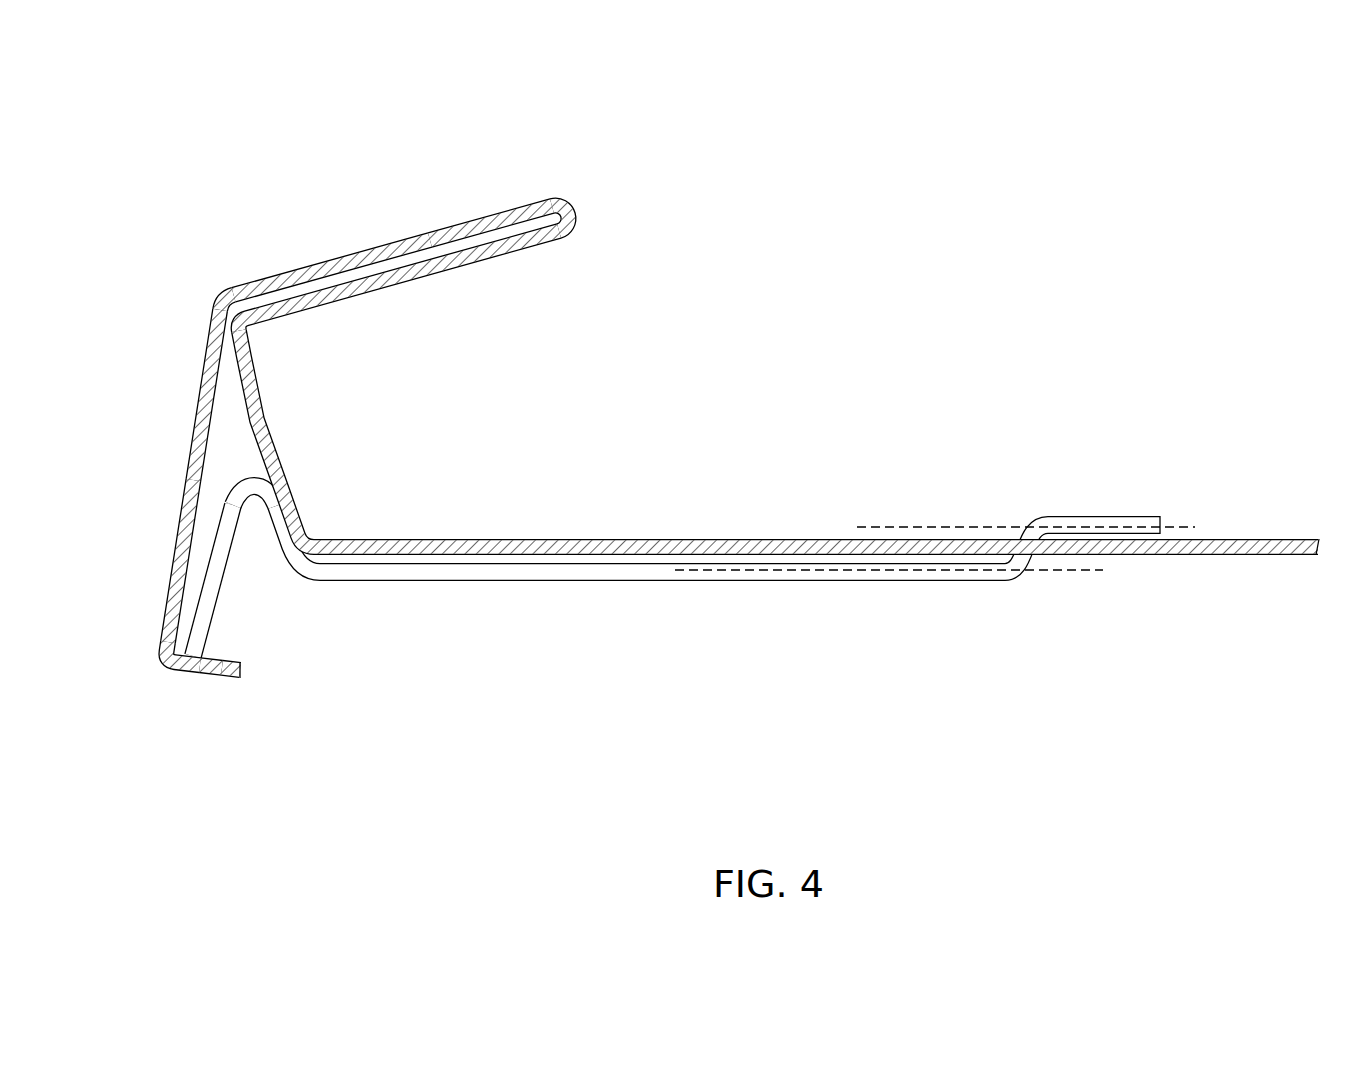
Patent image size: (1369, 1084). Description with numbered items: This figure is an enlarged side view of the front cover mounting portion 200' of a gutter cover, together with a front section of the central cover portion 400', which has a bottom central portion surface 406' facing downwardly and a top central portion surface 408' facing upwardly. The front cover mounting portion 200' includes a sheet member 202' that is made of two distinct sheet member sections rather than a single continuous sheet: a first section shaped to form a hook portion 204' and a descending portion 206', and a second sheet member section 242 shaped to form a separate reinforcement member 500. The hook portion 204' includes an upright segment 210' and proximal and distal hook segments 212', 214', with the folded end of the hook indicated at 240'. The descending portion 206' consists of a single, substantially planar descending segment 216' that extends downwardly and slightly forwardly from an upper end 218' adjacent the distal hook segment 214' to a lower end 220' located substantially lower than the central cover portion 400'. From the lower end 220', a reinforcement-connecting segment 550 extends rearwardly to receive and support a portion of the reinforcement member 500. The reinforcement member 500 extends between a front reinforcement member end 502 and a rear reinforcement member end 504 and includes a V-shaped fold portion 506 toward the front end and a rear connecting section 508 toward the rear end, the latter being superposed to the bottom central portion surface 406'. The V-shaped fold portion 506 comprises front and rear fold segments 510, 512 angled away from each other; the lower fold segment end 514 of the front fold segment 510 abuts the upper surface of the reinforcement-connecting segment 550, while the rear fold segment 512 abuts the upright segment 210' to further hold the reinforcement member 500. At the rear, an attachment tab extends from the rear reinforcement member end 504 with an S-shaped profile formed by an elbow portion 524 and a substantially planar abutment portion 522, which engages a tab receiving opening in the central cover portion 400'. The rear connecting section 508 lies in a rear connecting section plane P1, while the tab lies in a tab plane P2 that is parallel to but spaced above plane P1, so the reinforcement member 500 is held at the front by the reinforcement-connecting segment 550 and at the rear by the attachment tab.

The front cover mounting portion 200' is at (705, 435).
The sheet member 202' is at (379, 212).
The hook portion 204' is at (332, 212).
The descending portion 206' is at (141, 395).
The upright segment 210' is at (309, 439).
The proximal hook segment 212' is at (399, 290).
The distal hook segment 214' is at (491, 187).
The descending segment 216' is at (133, 560).
The upper end 218' is at (176, 290).
The lower end 220' is at (136, 659).
The folded end 240' is at (590, 166).
The second sheet member section 242 is at (918, 633).
The central cover portion 400' is at (1274, 527).
The bottom central portion surface 406' is at (1245, 588).
The top central portion surface 408' is at (1319, 511).
The reinforcement member 500 is at (680, 592).
The front reinforcement member end 502 is at (207, 642).
The rear reinforcement member end 504 is at (1143, 517).
The V-shaped fold portion 506 is at (297, 623).
The rear connecting section 508 is at (610, 632).
The front fold segment 510 is at (247, 583).
The rear fold segment 512 is at (265, 520).
The lower fold segment end 514 is at (185, 675).
The abutment portion 522 is at (1072, 517).
The elbow portion 524 is at (1033, 522).
The reinforcement-connecting segment 550 is at (222, 679).
The rear connecting section plane P1 is at (1090, 572).
The tab plane P2 is at (881, 525).